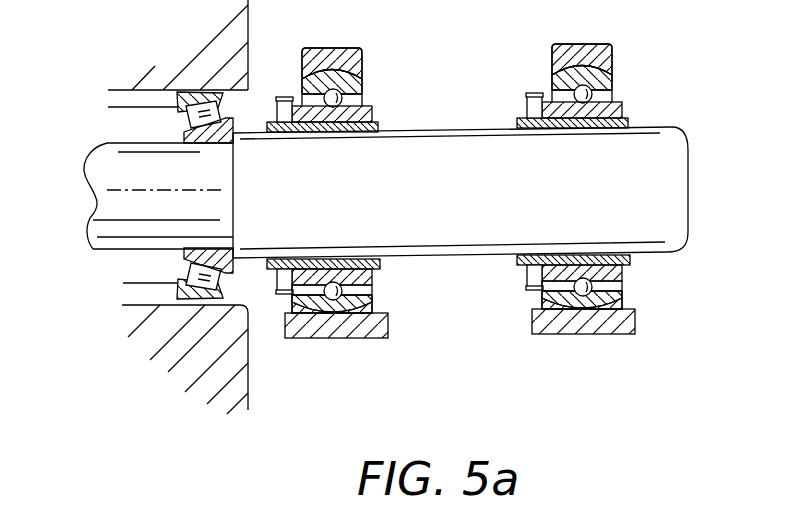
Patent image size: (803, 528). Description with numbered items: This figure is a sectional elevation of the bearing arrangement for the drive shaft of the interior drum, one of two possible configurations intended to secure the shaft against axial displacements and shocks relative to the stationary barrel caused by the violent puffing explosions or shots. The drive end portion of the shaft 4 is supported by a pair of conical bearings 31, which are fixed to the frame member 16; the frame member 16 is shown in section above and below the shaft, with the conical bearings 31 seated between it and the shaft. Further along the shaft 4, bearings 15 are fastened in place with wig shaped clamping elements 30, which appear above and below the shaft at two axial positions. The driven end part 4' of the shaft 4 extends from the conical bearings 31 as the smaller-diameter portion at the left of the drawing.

The shaft 4 is at (460, 156).
The driven end part of shaft 4' is at (123, 196).
The bearings 15 is at (540, 327).
The frame member 16 is at (204, 340).
The wig shaped clamping elements 30 is at (628, 121).
The conical bearings 31 is at (186, 132).